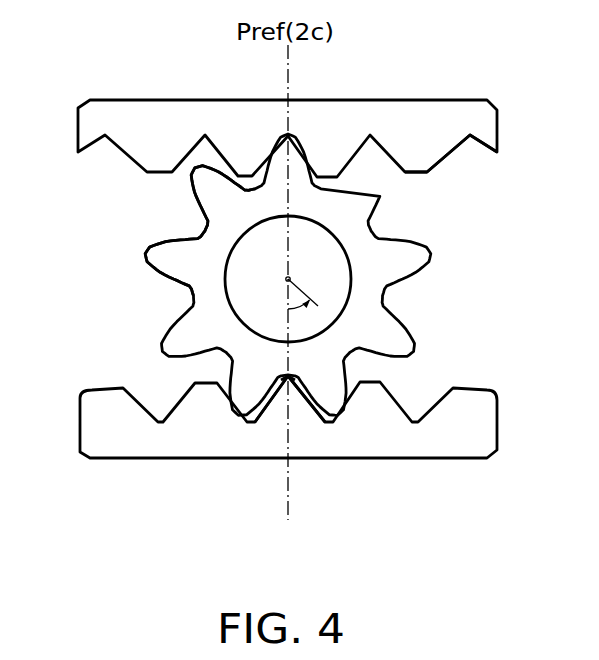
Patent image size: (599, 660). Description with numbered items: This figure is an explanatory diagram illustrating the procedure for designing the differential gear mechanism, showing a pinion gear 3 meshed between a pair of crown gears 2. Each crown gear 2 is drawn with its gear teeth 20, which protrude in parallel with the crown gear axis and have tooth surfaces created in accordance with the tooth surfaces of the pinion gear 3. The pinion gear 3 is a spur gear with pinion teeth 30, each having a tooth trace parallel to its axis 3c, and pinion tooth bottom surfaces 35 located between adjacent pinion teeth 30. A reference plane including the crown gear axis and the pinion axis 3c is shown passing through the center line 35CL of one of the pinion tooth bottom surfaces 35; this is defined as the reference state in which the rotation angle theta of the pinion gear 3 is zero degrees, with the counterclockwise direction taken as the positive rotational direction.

The crown gear 2 is at (480, 122).
The gear tooth 20 is at (420, 153).
The pinion gear 3 is at (385, 272).
The pinion tooth 30 is at (207, 187).
The axis 3c is at (288, 279).
The pinion tooth bottom surface 35 is at (287, 381).
The center line 35CL is at (288, 375).